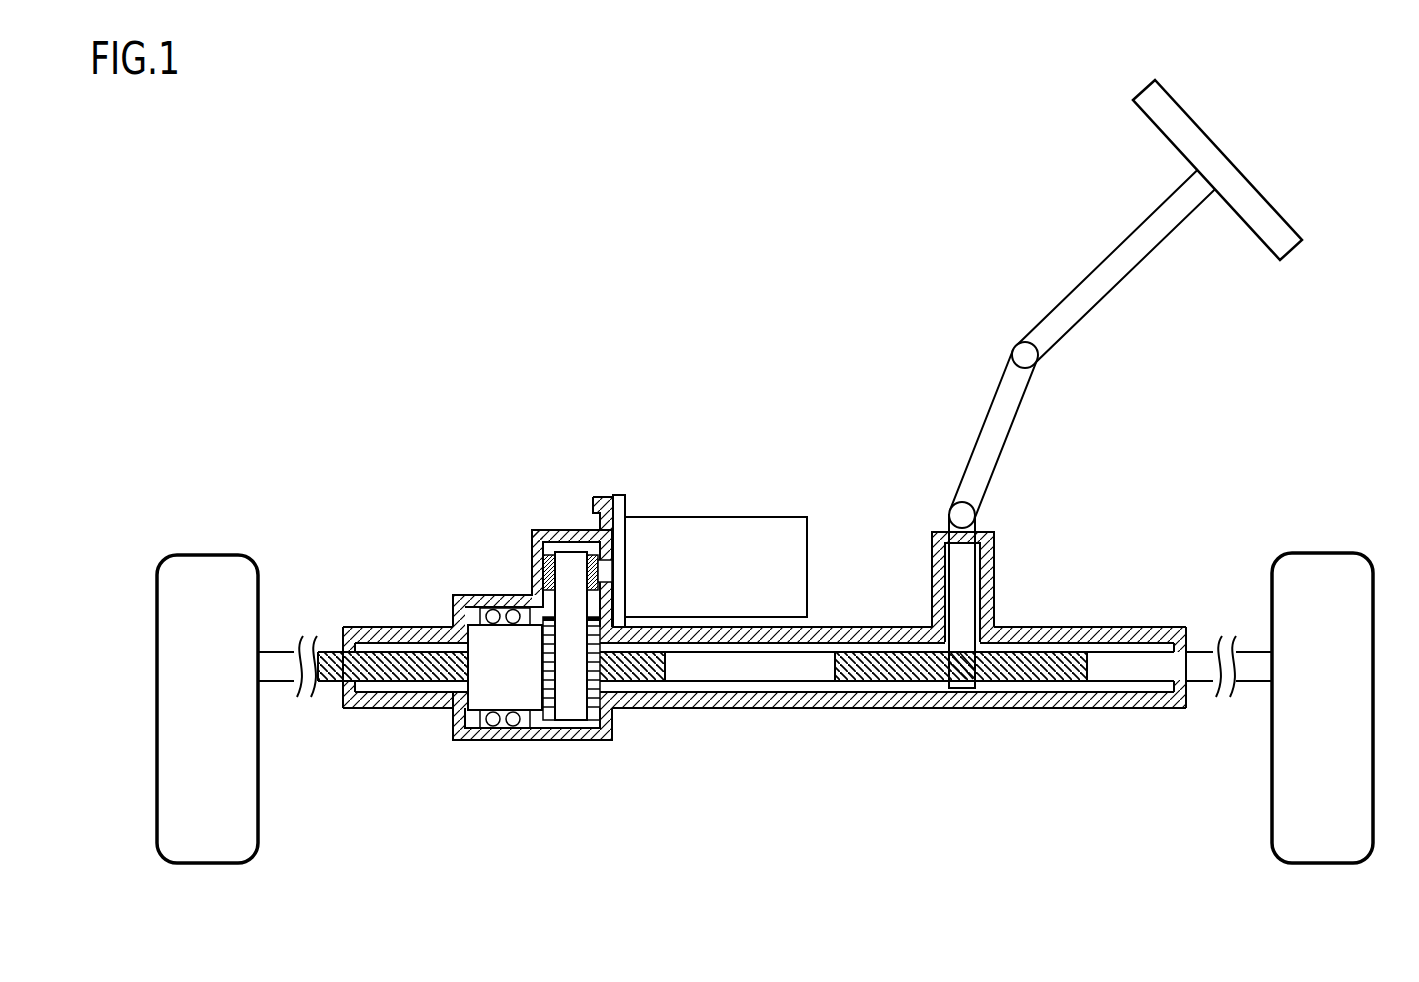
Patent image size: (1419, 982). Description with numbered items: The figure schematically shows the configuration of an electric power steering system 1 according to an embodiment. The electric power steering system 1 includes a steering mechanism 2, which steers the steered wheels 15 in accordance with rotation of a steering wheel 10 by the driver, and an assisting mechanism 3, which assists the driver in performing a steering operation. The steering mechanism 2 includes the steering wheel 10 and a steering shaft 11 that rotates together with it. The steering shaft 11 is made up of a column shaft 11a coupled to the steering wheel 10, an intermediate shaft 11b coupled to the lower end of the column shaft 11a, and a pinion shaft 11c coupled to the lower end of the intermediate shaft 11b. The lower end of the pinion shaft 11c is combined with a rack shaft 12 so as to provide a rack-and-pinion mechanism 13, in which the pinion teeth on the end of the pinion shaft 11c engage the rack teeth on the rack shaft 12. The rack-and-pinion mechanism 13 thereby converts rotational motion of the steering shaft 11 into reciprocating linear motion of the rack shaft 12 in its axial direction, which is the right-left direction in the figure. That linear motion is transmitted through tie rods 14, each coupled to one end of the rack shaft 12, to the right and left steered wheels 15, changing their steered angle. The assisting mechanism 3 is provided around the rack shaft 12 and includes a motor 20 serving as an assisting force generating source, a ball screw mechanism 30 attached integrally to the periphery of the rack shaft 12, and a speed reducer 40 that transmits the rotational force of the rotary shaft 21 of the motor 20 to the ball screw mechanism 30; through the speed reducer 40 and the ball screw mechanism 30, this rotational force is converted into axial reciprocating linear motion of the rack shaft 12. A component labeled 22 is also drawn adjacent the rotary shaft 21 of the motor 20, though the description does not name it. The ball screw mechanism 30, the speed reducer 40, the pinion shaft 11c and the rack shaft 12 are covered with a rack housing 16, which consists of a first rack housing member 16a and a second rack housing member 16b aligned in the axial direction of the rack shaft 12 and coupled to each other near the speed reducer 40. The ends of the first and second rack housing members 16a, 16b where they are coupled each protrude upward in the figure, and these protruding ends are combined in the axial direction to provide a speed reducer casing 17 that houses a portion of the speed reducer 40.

The electric power steering system 1 is at (768, 230).
The steering mechanism 2 is at (1256, 335).
The assisting mechanism 3 is at (625, 768).
The steering wheel 10 is at (1185, 102).
The steering shaft 11 is at (1039, 419).
The column shaft 11a is at (1098, 257).
The intermediate shaft 11b is at (995, 393).
The pinion shaft 11c is at (958, 568).
The rack shaft 12 is at (828, 686).
The rack-and-pinion mechanism 13 is at (995, 677).
The tie rod 14 is at (288, 652).
The steered wheel 15 is at (208, 555).
The rack housing 16 is at (840, 627).
The first rack housing member 16a is at (510, 730).
The second rack housing member 16b is at (540, 735).
The speed reducer casing 17 is at (530, 510).
The motor 20 is at (716, 506).
The rotary shaft 21 is at (603, 548).
The rotation angle sensor 22 is at (605, 592).
The ball screw mechanism 30 is at (458, 698).
The speed reducer 40 is at (547, 595).